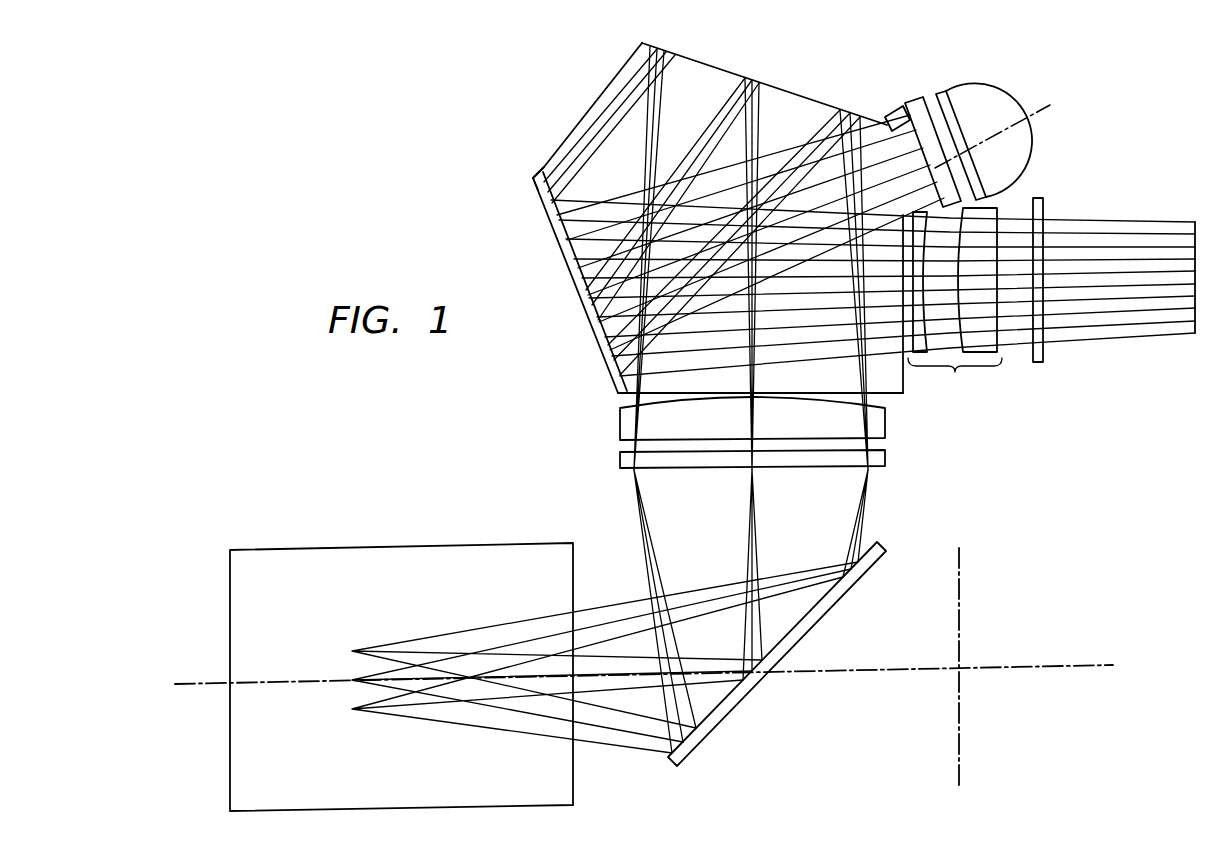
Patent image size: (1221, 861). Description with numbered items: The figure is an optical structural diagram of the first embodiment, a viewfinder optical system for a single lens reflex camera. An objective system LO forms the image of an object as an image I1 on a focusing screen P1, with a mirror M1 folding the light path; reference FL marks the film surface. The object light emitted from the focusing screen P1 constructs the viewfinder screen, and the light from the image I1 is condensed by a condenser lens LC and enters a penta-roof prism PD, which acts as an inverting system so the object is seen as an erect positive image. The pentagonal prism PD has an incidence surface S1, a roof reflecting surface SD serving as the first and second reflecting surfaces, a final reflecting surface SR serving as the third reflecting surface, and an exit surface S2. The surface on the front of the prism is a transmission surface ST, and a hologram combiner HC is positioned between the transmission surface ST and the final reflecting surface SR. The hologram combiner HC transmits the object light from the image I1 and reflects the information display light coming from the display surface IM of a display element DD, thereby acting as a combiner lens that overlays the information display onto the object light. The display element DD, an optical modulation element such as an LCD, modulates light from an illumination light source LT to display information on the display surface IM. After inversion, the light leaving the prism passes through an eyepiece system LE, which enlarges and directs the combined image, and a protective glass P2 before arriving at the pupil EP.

The penta-roof prism PD is at (717, 231).
The roof reflecting surface SD is at (797, 96).
The transmission surface ST is at (545, 167).
The final reflecting surface SR is at (534, 191).
The hologram combiner HC is at (533, 178).
The incidence surface S1 is at (893, 394).
The exit surface S2 is at (907, 384).
The display surface IM is at (887, 114).
The display element DD is at (906, 100).
The illumination light source LT is at (990, 90).
The eyepiece system LE is at (955, 303).
The protective glass P2 is at (1038, 364).
The pupil EP is at (1195, 222).
The condenser lens LC is at (619, 425).
The focusing screen P1 is at (886, 459).
The image I1 is at (619, 472).
The mirror M1 is at (893, 546).
The objective system LO is at (402, 546).
The film surface FL is at (962, 564).